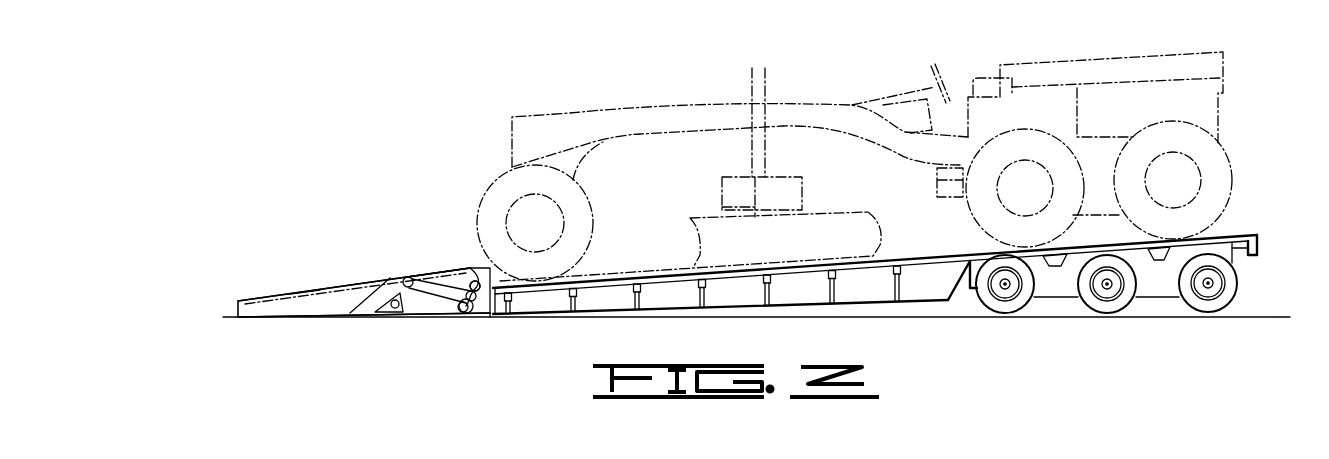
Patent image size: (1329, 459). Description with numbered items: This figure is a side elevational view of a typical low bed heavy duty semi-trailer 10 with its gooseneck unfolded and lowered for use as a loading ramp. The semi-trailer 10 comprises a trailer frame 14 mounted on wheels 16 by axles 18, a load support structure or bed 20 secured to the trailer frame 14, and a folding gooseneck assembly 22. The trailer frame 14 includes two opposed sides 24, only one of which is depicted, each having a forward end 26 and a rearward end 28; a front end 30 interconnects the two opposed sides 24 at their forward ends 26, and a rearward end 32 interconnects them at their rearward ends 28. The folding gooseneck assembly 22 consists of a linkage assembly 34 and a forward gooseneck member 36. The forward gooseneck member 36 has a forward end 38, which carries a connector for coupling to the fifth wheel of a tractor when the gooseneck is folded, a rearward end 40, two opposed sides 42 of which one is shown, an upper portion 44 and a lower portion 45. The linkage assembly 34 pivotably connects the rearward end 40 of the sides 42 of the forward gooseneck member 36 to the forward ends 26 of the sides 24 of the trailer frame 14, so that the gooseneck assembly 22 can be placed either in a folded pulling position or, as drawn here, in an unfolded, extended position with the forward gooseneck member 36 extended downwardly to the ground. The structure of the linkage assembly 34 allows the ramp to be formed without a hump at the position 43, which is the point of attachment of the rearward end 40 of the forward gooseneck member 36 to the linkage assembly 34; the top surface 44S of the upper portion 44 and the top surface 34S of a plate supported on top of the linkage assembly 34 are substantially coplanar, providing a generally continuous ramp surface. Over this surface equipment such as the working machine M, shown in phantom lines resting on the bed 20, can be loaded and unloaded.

The semi-trailer 10 is at (879, 314).
The trailer frame 14 is at (905, 268).
The wheels 16 is at (1008, 308).
The axles 18 is at (1003, 288).
The load support structure or bed 20 is at (607, 275).
The folding gooseneck assembly 22 is at (399, 248).
The opposed sides 24 is at (720, 298).
The forward end 26 is at (491, 318).
The rearward end 28 is at (1255, 233).
The front end 30 is at (474, 284).
The rearward end 32 is at (1256, 241).
The linkage assembly 34 is at (421, 276).
The top surface 34S is at (421, 276).
The forward gooseneck member 36 is at (298, 292).
The forward end 38 is at (250, 302).
The rearward end 40 is at (383, 285).
The opposed sides 42 is at (318, 312).
The position 43 is at (405, 272).
The upper portion 44 is at (297, 291).
The top surface 44S is at (303, 291).
The lower portion 45 is at (317, 314).
The working machine M is at (1180, 68).